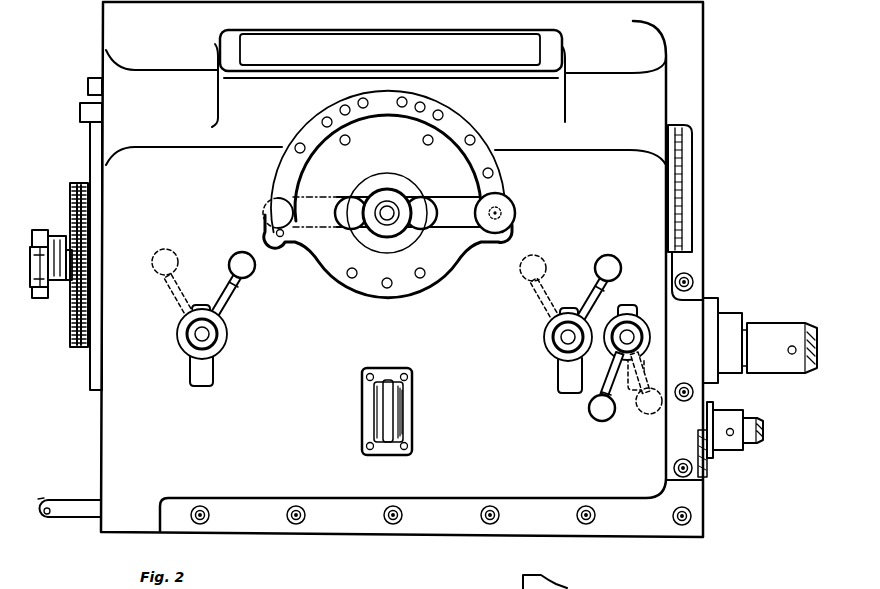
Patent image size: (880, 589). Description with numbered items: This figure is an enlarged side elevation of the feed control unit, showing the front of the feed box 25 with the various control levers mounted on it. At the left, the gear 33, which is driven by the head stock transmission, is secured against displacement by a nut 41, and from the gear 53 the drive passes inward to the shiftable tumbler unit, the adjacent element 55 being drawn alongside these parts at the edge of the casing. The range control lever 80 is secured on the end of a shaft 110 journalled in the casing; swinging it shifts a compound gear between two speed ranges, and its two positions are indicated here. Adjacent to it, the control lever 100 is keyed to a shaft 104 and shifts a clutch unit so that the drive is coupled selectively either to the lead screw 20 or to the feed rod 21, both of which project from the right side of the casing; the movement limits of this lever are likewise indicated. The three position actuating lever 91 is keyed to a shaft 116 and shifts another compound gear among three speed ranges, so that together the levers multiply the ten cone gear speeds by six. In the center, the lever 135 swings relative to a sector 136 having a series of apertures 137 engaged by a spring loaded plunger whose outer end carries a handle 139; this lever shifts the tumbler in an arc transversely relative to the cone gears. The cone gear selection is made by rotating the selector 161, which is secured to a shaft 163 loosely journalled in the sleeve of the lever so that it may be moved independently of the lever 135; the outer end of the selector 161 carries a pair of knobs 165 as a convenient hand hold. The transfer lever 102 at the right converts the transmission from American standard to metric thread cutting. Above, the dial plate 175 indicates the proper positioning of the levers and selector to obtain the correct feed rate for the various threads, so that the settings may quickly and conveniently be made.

The dial plate 175 is at (478, 47).
The apertures 137 is at (443, 117).
The sector 136 is at (479, 151).
The shaft 163 is at (388, 205).
The selector 161 is at (413, 192).
The knobs 165 is at (349, 224).
The handle 139 is at (508, 219).
The lever 135 is at (459, 229).
The transfer lever 102 is at (694, 190).
The collar 55 is at (62, 244).
The gear 53 is at (88, 276).
The nut 41 is at (40, 294).
The gear 33 is at (71, 341).
The actuating lever 91 is at (238, 262).
The shaft 116 is at (203, 334).
The range control lever 80 is at (609, 260).
The shaft 104 is at (627, 330).
The shaft 110 is at (566, 341).
The control lever 100 is at (605, 418).
The lead screw 20 is at (793, 331).
The feed rod 21 is at (755, 421).
The feed box 25 is at (478, 487).